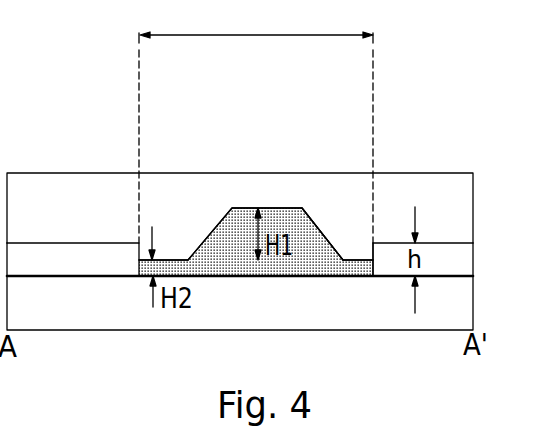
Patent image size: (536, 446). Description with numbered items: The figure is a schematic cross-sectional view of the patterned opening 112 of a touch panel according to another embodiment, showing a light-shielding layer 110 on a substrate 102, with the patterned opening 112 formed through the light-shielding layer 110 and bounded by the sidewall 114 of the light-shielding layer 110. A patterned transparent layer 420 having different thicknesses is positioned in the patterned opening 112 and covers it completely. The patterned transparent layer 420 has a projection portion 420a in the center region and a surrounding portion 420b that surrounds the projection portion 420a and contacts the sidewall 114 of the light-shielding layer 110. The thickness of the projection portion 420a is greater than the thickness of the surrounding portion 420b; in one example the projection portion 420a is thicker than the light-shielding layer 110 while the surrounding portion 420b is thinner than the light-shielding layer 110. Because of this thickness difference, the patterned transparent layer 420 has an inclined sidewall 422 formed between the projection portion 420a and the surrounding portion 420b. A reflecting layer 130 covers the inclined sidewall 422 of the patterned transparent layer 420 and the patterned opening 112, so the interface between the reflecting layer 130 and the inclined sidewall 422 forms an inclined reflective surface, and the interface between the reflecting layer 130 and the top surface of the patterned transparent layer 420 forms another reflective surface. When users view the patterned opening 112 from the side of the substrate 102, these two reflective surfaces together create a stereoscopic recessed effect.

The substrate 102 is at (75, 300).
The light-shielding layer 110 is at (55, 260).
The patterned opening 112 is at (256, 121).
The sidewall of the light-shielding layer 114 is at (375, 252).
The reflecting layer 130 is at (95, 232).
The patterned transparent layer 420 is at (282, 268).
The projection portion 420a is at (280, 217).
The surrounding portion 420b is at (175, 260).
The inclined sidewall 422 is at (317, 235).